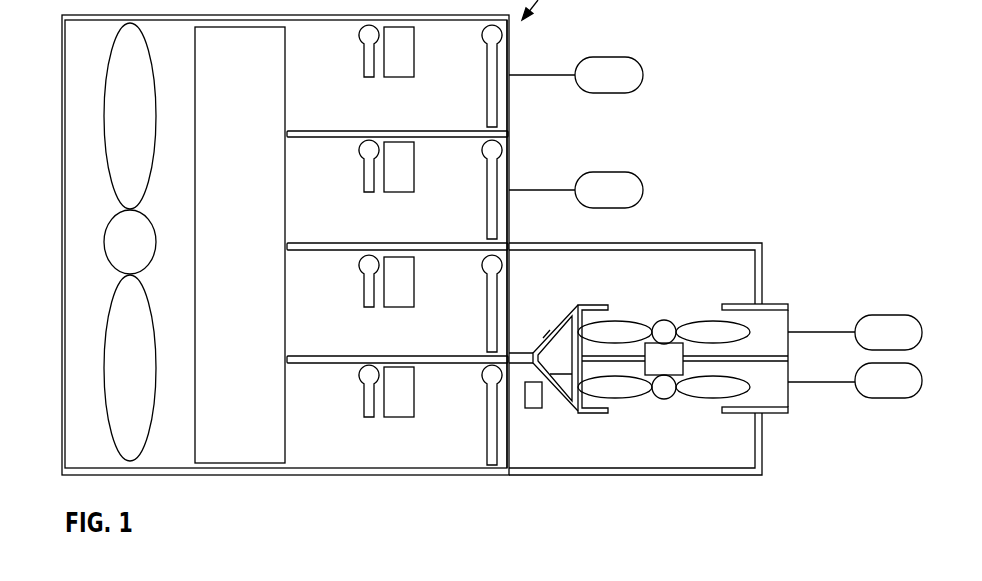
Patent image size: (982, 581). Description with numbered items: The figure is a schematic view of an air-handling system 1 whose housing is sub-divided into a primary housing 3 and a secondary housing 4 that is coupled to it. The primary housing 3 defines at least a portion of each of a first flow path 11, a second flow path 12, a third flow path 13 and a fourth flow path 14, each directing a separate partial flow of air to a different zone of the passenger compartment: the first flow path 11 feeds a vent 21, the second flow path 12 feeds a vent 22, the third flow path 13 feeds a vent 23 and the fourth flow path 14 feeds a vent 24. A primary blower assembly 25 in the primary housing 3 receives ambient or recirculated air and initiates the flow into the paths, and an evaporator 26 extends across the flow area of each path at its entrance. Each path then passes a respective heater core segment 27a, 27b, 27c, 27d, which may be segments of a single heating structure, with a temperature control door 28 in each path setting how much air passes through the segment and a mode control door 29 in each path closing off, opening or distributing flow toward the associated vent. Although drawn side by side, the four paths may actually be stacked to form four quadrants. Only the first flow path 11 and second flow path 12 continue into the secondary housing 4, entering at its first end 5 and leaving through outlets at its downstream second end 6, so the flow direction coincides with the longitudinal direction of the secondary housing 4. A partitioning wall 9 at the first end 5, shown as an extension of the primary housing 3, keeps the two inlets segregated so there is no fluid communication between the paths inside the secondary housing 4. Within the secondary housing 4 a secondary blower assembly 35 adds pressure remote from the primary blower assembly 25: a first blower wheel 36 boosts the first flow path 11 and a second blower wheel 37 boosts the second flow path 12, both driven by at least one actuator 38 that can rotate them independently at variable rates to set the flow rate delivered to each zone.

The air-handling system 1 is at (769, 89).
The primary housing 3 is at (55, 480).
The secondary housing 4 is at (766, 479).
The first end 5 is at (508, 466).
The second end 6 is at (788, 393).
The partitioning wall 9 is at (518, 353).
The first flow path 11 is at (328, 427).
The second flow path 12 is at (329, 313).
The third flow path 13 is at (329, 204).
The fourth flow path 14 is at (329, 89).
The vent 21 is at (900, 394).
The vent 22 is at (900, 345).
The vent 23 is at (621, 203).
The vent 24 is at (621, 88).
The primary blower assembly 25 is at (125, 263).
The evaporator 26 is at (249, 256).
The heater core segment 27a is at (400, 392).
The heater core segment 27b is at (400, 282).
The heater core segment 27c is at (400, 167).
The heater core segment 27d is at (400, 52).
The temperature control door 28 is at (359, 38).
The mode control door 29 is at (487, 92).
The secondary blower assembly 35 is at (640, 408).
The first blower wheel 36 is at (662, 399).
The second blower wheel 37 is at (667, 321).
The actuator 38 is at (676, 371).